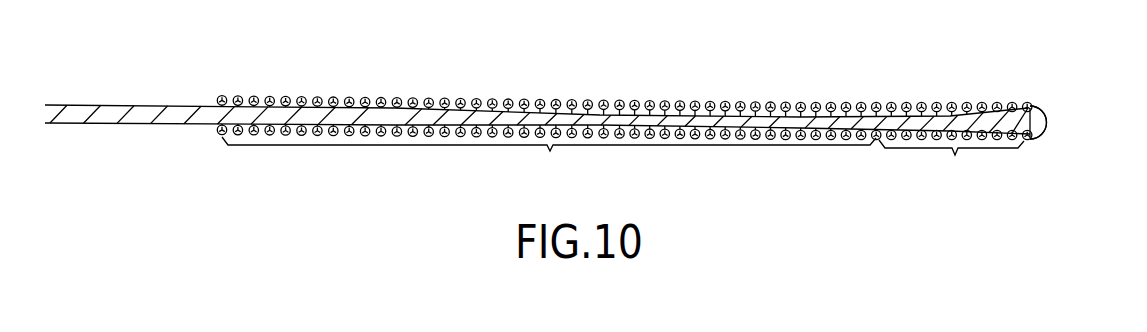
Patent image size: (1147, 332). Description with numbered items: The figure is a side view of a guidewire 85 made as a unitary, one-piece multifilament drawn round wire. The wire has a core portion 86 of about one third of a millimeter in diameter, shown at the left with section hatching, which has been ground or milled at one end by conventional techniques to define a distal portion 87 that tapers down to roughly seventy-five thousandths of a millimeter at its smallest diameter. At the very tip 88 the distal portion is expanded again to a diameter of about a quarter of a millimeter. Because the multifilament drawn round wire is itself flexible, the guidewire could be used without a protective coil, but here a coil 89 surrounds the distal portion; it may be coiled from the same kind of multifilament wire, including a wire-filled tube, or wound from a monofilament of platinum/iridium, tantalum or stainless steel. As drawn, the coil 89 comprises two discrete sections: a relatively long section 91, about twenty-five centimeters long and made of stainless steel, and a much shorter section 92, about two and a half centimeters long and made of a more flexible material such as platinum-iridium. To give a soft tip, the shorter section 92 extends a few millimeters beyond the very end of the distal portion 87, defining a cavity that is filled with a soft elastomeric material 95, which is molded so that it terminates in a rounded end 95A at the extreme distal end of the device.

The guidewire 85 is at (243, 82).
The core portion 86 is at (117, 118).
The distal portion 87 is at (793, 125).
The tip 88 is at (1003, 122).
The coil 89 is at (570, 95).
The relatively long section 91 is at (549, 160).
The much shorter section 92 is at (951, 165).
The soft elastomeric material 95 is at (1043, 111).
The rounded end 95A is at (1049, 123).